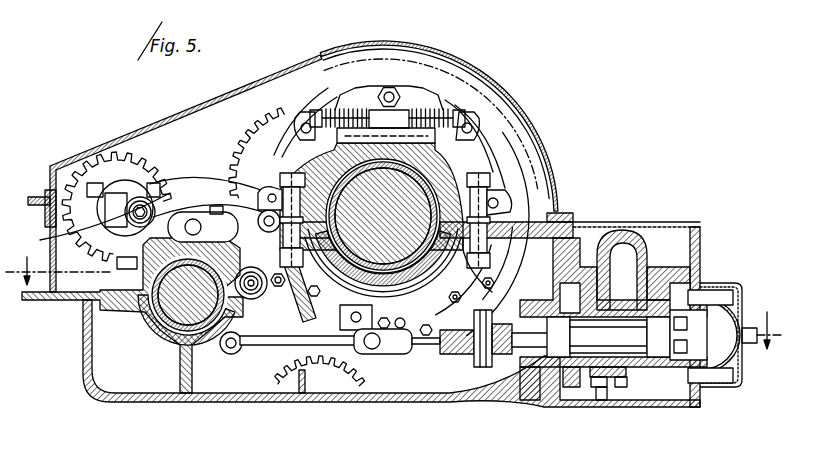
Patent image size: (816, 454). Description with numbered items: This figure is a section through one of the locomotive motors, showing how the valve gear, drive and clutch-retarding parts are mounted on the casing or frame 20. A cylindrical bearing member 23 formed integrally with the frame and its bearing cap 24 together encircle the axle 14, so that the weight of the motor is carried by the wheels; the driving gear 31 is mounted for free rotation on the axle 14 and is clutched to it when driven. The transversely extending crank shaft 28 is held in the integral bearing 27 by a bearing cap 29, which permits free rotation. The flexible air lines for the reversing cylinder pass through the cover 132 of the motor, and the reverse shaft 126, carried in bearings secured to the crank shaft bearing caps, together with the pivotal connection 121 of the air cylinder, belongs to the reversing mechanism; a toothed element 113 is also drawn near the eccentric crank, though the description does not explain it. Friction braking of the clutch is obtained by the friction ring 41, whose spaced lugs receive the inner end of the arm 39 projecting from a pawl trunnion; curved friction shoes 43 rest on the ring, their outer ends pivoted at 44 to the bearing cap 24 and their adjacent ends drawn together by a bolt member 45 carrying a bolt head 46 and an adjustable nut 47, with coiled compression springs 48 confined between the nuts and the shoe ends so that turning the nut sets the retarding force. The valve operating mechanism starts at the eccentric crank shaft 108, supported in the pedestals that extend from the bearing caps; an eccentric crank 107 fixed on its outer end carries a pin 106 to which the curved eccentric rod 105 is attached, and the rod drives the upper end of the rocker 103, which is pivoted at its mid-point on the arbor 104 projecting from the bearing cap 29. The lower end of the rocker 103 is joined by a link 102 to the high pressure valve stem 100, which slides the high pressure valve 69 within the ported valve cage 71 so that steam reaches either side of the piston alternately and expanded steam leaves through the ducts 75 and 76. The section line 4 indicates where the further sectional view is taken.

The cover 132 is at (195, 108).
The driving gear 31 is at (265, 125).
The bolt member 45 is at (432, 175).
The adjustable nut 47 is at (305, 120).
The coiled compression springs 48 is at (337, 110).
The bolt head 46 is at (433, 106).
The friction shoes 43 is at (244, 160).
The bearing cap 24 is at (447, 162).
The pivotal connection 44 is at (498, 202).
The gear 113 is at (100, 158).
The eccentric crank 107 is at (92, 268).
The curved eccentric rod 105 is at (210, 192).
The pin 106 is at (156, 207).
The pivotal connection 121 is at (247, 186).
The reverse shaft 126 is at (214, 233).
The eccentric crank shaft 108 is at (50, 228).
The section line 4— 4 is at (394, 303).
The bearing caps 29 is at (117, 308).
The crank shaft 28 is at (160, 302).
The bearing 27 is at (172, 338).
The casing or frame 20 is at (87, 374).
The arbor 104 is at (231, 354).
The rocker 103 is at (262, 348).
The friction ring 41 is at (284, 291).
The arm 39 is at (370, 342).
The link 102 is at (323, 346).
The high pressure valve stem 100 is at (427, 345).
The axle 14 is at (420, 277).
The bearing member 23 is at (500, 273).
The duct 76 is at (532, 362).
The valve cage 71 is at (653, 294).
The duct 75 is at (711, 310).
The high pressure valve 69 is at (661, 384).